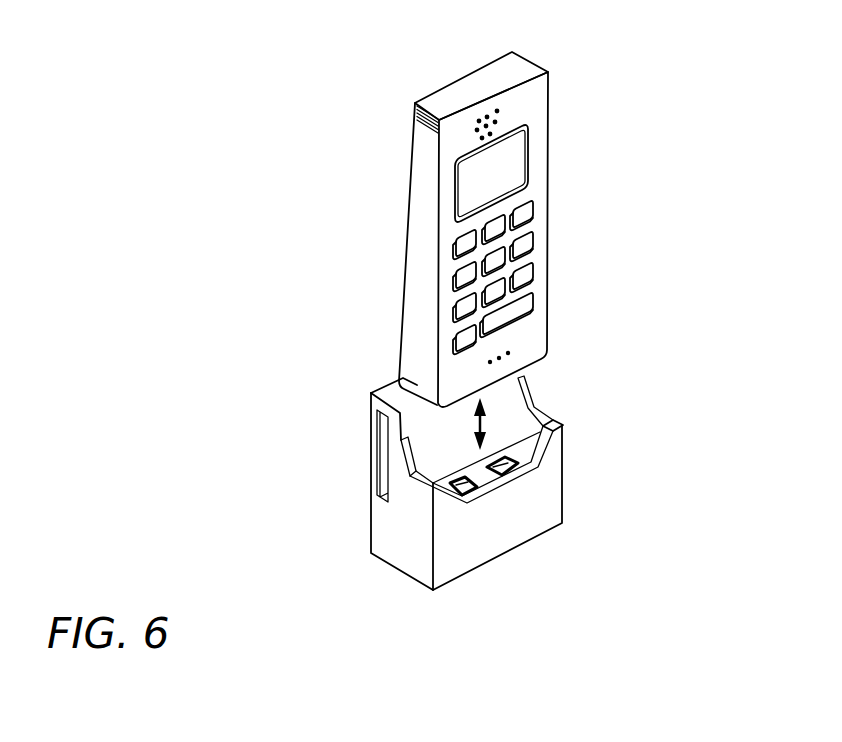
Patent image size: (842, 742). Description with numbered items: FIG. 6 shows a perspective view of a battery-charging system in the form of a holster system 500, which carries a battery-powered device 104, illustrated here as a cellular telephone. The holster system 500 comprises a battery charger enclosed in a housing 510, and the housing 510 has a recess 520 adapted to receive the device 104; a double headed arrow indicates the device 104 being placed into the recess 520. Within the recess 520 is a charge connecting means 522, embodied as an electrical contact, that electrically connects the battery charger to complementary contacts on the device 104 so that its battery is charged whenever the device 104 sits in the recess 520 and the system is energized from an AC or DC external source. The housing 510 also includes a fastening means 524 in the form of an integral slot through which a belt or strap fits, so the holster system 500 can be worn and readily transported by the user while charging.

The device 104 is at (457, 90).
The holster system 500 is at (522, 584).
The housing 510 is at (558, 468).
The recess 520 is at (430, 452).
The charge connecting means 522 is at (470, 468).
The fastening means 524 is at (388, 487).